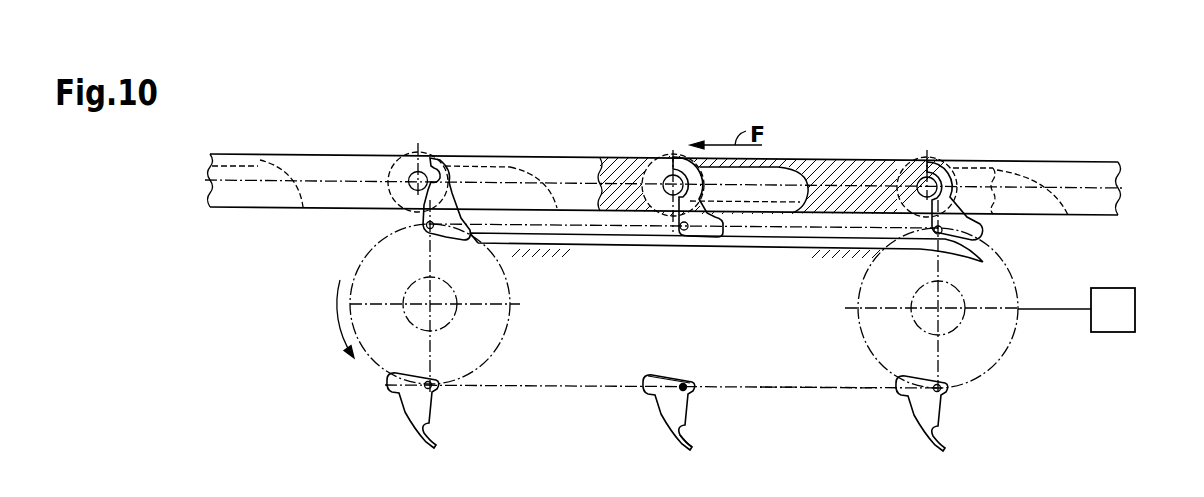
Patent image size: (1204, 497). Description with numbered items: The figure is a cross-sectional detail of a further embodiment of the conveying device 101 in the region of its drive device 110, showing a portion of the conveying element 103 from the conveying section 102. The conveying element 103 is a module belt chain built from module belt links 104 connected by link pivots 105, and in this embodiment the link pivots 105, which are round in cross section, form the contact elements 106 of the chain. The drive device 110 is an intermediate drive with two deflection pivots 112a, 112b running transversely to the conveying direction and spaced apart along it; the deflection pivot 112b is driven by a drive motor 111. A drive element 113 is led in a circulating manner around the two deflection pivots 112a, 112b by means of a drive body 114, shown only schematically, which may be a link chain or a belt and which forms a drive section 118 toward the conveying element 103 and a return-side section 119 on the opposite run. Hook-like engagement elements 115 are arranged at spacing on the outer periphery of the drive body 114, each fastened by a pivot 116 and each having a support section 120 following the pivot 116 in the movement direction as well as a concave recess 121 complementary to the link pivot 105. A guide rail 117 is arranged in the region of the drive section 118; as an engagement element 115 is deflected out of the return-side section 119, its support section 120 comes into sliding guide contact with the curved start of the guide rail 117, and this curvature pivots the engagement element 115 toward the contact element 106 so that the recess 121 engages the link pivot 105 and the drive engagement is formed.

The conveying device 101 is at (1021, 148).
The conveying section 102 is at (430, 147).
The conveying element 103 is at (333, 153).
The module belt link 104 is at (848, 176).
The link pivot 105 is at (929, 178).
The contact element 106 is at (667, 178).
The drive device 110 is at (356, 257).
The drive motor 111 is at (1120, 320).
The deflection pivot 112a is at (430, 305).
The deflection pivot 112b is at (938, 308).
The drive element 113 is at (534, 388).
The drive body 114 is at (858, 390).
The engagement element 115 is at (662, 416).
The pivot 116 is at (686, 384).
The guide rail 117 is at (645, 240).
The drive section 118 is at (776, 224).
The return-side section 119 is at (791, 390).
The support section 120 is at (670, 374).
The recess 121 is at (678, 432).